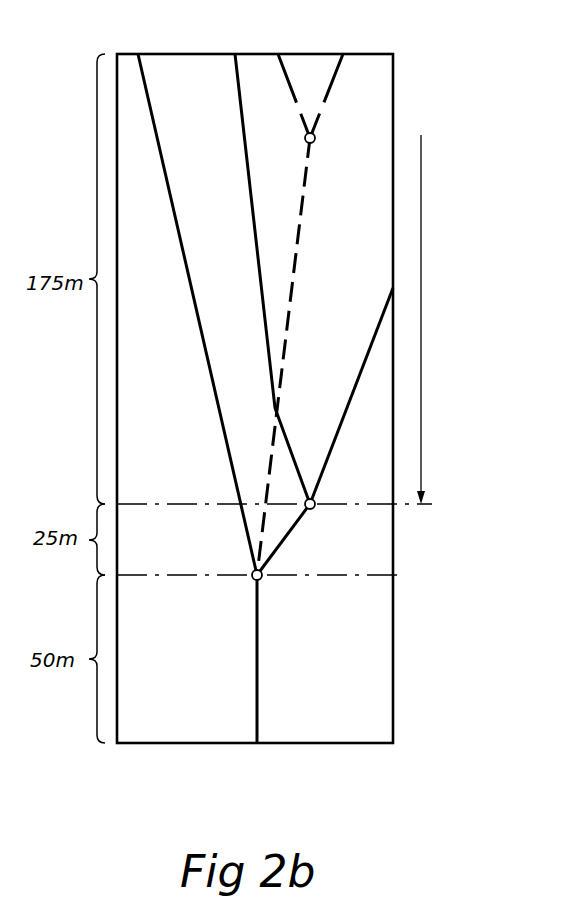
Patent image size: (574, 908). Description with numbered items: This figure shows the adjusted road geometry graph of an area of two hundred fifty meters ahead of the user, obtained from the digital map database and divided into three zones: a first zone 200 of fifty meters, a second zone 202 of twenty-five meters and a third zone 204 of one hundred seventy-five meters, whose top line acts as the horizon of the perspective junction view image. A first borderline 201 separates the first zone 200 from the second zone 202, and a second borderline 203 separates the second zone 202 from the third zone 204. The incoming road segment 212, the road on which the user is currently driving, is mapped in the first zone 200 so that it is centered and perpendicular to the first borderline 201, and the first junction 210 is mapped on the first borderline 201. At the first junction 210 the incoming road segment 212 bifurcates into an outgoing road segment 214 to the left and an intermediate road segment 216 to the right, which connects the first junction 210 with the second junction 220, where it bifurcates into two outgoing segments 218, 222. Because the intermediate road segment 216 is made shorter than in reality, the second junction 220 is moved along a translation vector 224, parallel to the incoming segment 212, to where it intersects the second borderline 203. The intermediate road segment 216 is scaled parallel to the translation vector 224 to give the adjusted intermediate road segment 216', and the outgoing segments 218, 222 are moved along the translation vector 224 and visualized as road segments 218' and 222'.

The first zone 200 is at (380, 670).
The first borderline 201 is at (393, 578).
The second zone 202 is at (380, 540).
The second borderline 203 is at (393, 504).
The third zone 204 is at (378, 74).
The first junction 210 is at (252, 580).
The incoming road segment 212 is at (255, 693).
The outgoing road segment 214 is at (207, 355).
The intermediate road segment 216 is at (306, 356).
The adjusted intermediate road segment 216' is at (302, 539).
The outgoing segment 218 is at (271, 81).
The moved outgoing road segment 218' is at (283, 279).
The second junction 220 is at (315, 142).
The outgoing segment 222 is at (355, 81).
The moved outgoing road segment 222' is at (351, 396).
The translation vector 224 is at (423, 290).